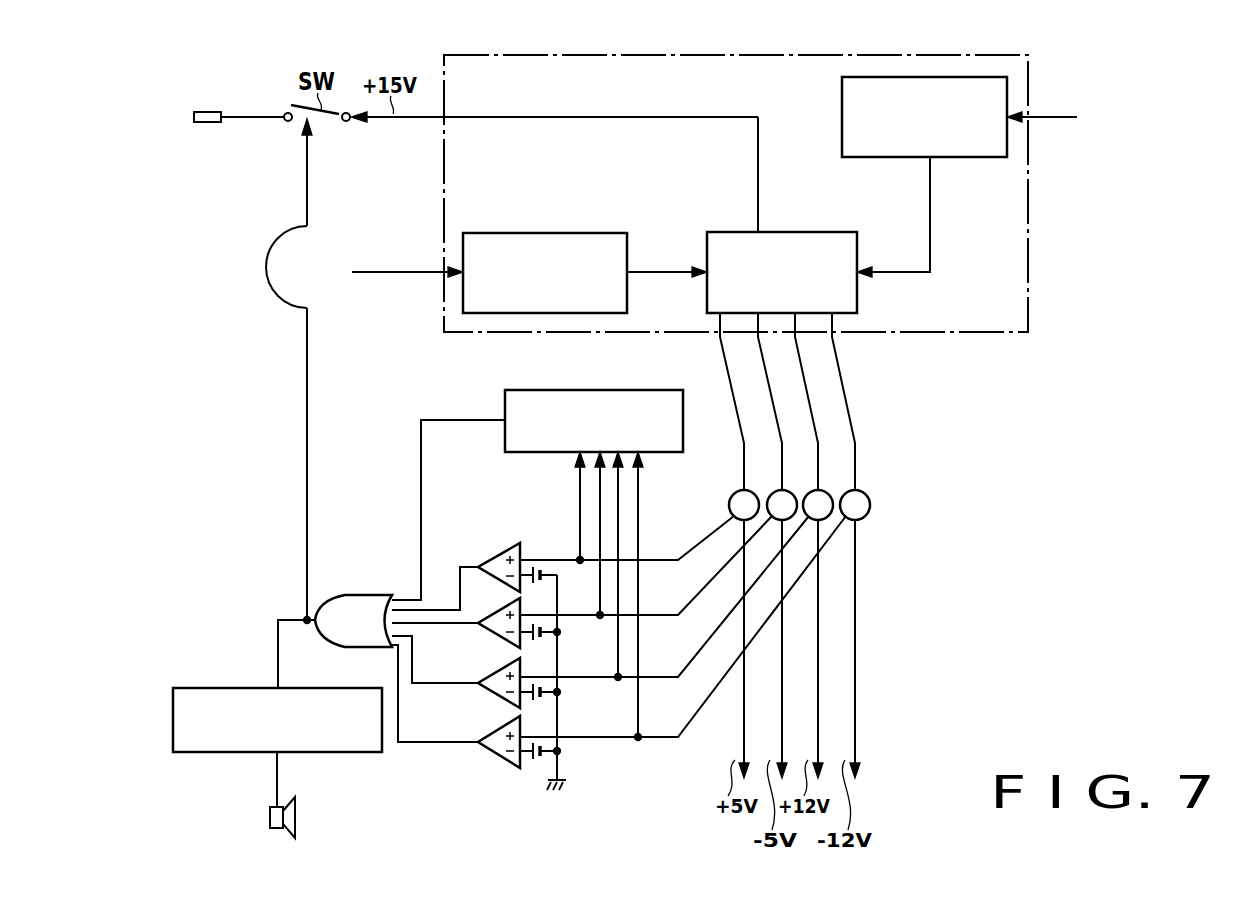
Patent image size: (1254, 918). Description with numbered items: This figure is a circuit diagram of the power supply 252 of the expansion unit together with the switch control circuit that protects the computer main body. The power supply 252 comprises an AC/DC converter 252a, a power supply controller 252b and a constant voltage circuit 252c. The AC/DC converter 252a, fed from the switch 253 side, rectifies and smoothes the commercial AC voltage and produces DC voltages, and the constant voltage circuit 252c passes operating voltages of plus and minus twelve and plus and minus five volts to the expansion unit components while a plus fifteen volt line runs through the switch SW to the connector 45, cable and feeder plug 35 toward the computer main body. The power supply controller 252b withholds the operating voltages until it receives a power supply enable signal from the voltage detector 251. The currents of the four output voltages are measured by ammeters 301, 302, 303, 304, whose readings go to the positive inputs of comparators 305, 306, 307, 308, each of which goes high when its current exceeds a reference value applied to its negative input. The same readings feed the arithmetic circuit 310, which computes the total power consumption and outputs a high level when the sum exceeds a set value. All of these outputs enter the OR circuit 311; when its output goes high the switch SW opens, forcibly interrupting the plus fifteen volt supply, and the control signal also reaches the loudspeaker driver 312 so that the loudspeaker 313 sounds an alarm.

The feeder plug 35 is at (207, 111).
The connector 45 is at (256, 114).
The voltage detector 251 is at (302, 267).
The power supply 252 is at (795, 55).
The AC/DC converter 252a is at (956, 77).
The power supply controller 252b is at (545, 233).
The constant voltage circuit 252c is at (803, 232).
The switch 253 is at (1119, 114).
The ammeter 301 is at (733, 495).
The ammeter 302 is at (771, 495).
The ammeter 303 is at (807, 495).
The ammeter 304 is at (844, 495).
The comparator 305 is at (491, 559).
The comparator 306 is at (491, 615).
The comparator 307 is at (491, 679).
The comparator 308 is at (491, 739).
The arithmetic circuit 310 is at (590, 391).
The OR circuit 311 is at (367, 594).
The loudspeaker driver 312 is at (321, 753).
The loudspeaker 313 is at (298, 818).